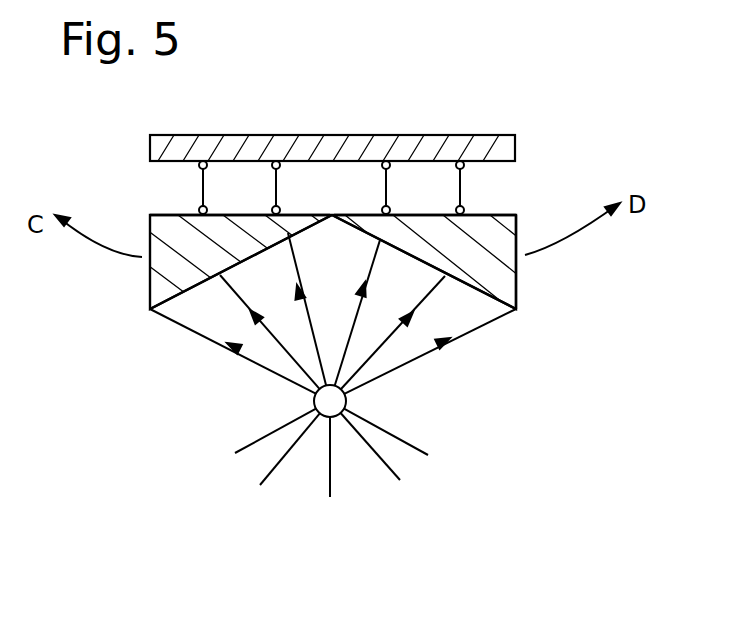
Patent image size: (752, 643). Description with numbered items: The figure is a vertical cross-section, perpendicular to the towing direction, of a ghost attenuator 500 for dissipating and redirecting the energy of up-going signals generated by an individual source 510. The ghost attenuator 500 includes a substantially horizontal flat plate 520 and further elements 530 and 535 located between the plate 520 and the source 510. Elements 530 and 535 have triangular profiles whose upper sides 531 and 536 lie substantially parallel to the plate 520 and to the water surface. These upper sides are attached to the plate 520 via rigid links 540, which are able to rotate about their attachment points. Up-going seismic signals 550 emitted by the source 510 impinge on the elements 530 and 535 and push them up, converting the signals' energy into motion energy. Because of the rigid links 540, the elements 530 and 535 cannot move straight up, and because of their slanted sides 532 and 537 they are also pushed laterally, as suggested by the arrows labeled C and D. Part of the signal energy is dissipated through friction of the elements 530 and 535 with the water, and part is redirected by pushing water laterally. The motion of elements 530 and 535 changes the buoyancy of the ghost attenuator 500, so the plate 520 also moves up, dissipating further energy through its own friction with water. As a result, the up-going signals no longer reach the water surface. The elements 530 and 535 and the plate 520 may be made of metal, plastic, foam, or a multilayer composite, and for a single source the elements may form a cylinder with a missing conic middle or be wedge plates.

The ghost attenuator 500 is at (137, 160).
The individual source 510 is at (346, 401).
The flat plate 520 is at (516, 135).
The element 530 is at (150, 298).
The upper side 531 is at (162, 215).
The slanted side 532 is at (190, 290).
The element 535 is at (517, 292).
The upper side 536 is at (497, 216).
The slanted side 537 is at (475, 290).
The rigid links 540 is at (280, 192).
The up-going seismic signals 550 is at (333, 313).